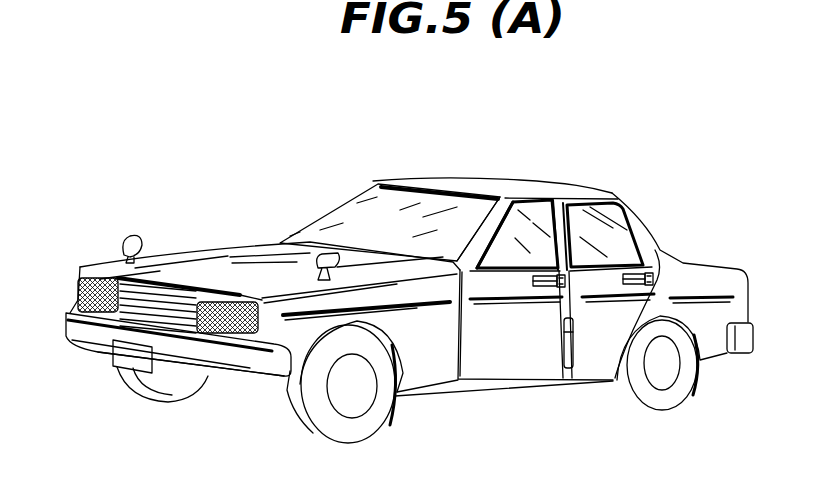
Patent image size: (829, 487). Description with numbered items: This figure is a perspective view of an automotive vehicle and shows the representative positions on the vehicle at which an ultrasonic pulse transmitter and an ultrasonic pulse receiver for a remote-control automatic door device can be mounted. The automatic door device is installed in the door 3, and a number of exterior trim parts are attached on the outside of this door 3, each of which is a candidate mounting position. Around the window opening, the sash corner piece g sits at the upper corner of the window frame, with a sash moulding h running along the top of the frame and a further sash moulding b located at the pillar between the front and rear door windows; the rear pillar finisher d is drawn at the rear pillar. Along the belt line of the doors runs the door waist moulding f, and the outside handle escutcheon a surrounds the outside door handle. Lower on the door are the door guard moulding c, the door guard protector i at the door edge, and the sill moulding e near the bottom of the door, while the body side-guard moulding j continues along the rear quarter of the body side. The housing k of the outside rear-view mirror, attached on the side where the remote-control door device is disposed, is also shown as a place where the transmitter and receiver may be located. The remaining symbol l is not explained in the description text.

The door 3 is at (503, 363).
The outside handle escutcheon a is at (565, 283).
The sash moulding b is at (544, 199).
The door guard moulding c is at (530, 340).
The rear pillar finisher d is at (600, 266).
The sill moulding e is at (570, 372).
The door waist moulding f is at (577, 269).
The sash corner piece g is at (478, 262).
The sash moulding h is at (519, 200).
The door guard protector i is at (563, 345).
The body side-guard moulding j is at (707, 298).
The housing of outside rear-view mirror k is at (336, 262).
The windshield l is at (312, 206).